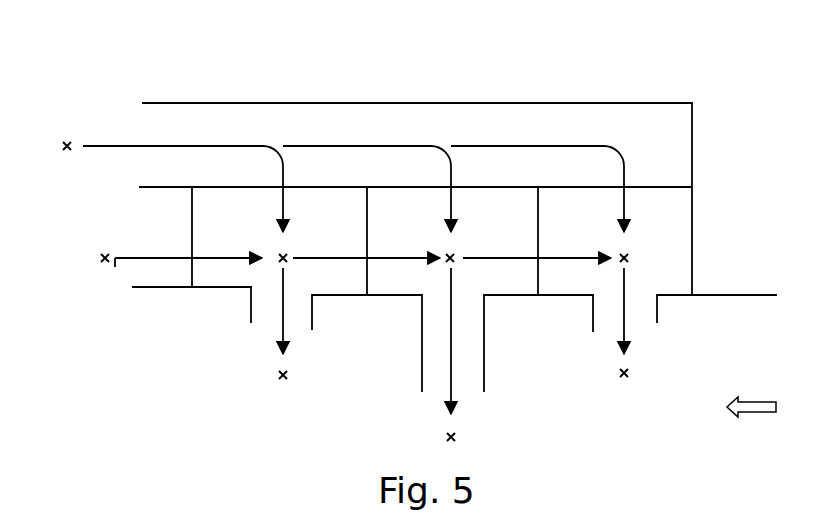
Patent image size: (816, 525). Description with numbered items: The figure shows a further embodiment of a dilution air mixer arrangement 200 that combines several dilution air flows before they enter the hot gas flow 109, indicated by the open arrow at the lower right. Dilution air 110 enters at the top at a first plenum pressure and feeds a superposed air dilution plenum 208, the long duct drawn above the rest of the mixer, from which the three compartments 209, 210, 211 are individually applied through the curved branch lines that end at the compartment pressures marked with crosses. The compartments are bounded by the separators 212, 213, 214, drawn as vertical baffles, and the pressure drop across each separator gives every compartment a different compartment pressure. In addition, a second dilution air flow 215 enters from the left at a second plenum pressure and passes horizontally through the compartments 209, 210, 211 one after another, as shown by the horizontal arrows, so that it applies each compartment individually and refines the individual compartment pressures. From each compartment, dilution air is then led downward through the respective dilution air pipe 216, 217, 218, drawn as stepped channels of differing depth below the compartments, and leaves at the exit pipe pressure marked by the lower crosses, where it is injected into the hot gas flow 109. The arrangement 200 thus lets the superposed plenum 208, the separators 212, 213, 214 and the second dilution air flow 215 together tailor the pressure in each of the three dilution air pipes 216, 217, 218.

The mixer arrangement 200 is at (592, 78).
The superposed air dilution plenum 208 is at (331, 110).
The dilution air 110 is at (142, 143).
The compartment 209 is at (238, 236).
The compartment 210 is at (420, 236).
The compartment 211 is at (593, 236).
The separator 212 is at (189, 275).
The separator 213 is at (367, 273).
The separator 214 is at (538, 274).
The second dilution air flow 215 is at (115, 267).
The dilution air pipe 216 is at (249, 320).
The dilution air pipe 217 is at (422, 382).
The dilution air pipe 218 is at (592, 325).
The hot gas flow 109 is at (727, 404).